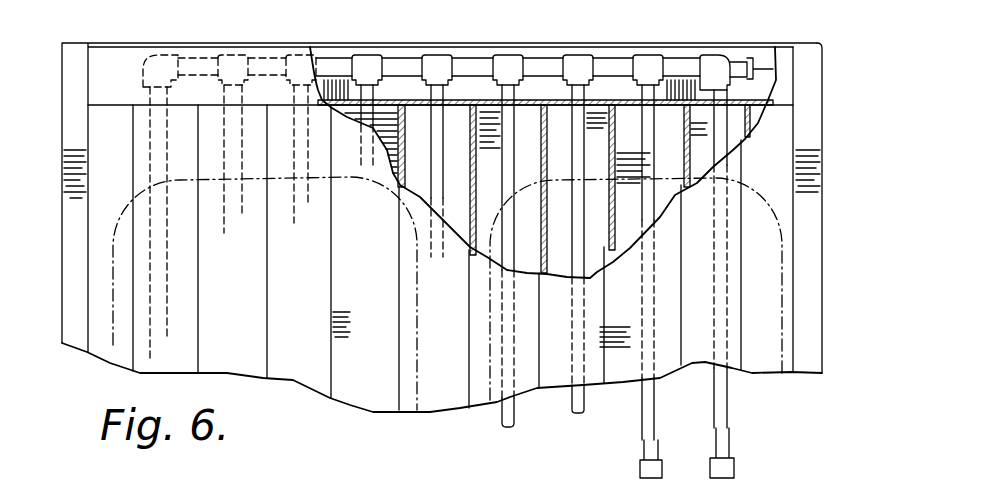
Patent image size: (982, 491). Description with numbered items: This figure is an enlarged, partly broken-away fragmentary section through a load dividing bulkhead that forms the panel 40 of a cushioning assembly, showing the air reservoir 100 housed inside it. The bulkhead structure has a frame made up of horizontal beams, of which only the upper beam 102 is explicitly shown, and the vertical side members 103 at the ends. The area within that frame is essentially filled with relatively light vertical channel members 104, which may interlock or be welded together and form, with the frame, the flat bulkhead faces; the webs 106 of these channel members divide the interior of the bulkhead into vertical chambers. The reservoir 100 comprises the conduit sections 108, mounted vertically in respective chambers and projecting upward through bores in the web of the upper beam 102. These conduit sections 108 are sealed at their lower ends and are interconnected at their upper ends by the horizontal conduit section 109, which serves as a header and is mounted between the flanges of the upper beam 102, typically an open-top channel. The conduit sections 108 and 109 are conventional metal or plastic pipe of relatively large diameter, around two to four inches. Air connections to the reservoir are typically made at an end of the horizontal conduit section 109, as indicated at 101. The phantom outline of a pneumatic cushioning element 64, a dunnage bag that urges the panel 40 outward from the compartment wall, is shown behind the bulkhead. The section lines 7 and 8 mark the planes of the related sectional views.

The panel 40 is at (481, 227).
The pneumatic cushioning element 64 is at (98, 355).
The air reservoir 100 is at (576, 49).
The air connection 101 is at (771, 58).
The upper beam 102 is at (755, 88).
The vertical side member 103 is at (810, 335).
The vertical channel member 104 is at (777, 200).
The web 106 is at (550, 262).
The conduit section 108 is at (645, 398).
The horizontal conduit section 109 is at (477, 60).
The section line 7- 7 is at (673, 83).
The section line 8- 8 is at (525, 157).